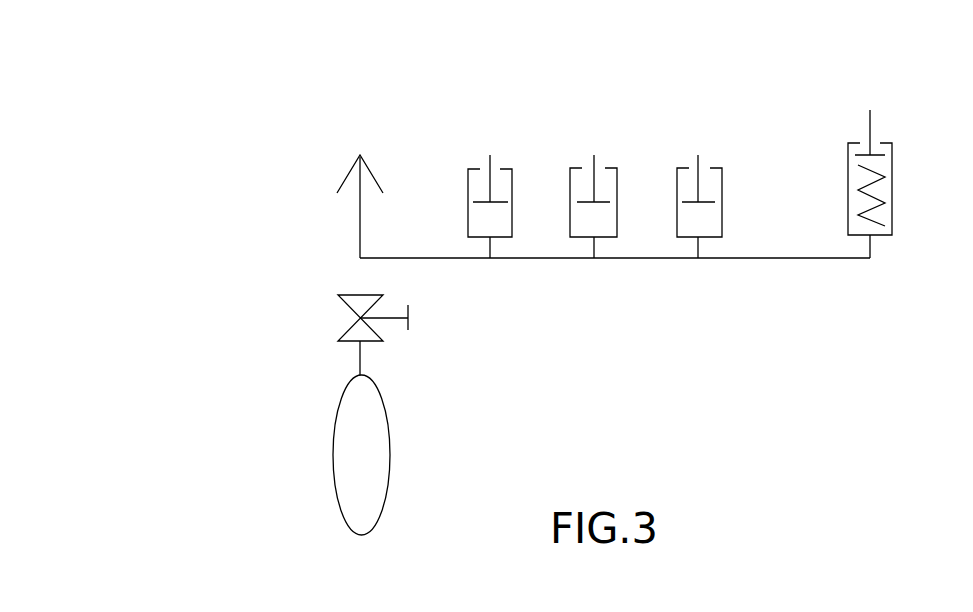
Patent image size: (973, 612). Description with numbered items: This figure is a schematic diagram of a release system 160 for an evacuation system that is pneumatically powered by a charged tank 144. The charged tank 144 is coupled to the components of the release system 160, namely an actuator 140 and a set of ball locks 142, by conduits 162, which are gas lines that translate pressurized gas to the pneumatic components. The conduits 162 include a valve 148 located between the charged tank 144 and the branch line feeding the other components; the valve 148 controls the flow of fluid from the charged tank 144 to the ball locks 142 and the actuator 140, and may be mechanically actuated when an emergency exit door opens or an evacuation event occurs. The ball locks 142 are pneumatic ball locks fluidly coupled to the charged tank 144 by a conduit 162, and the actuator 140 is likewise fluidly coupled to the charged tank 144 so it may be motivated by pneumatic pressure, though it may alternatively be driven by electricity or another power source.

The actuator 140 is at (892, 197).
The ball locks 142 is at (685, 167).
The charged tank 144 is at (365, 481).
The valve 148 is at (340, 295).
The release system 160 is at (268, 145).
The conduits 162 is at (360, 358).